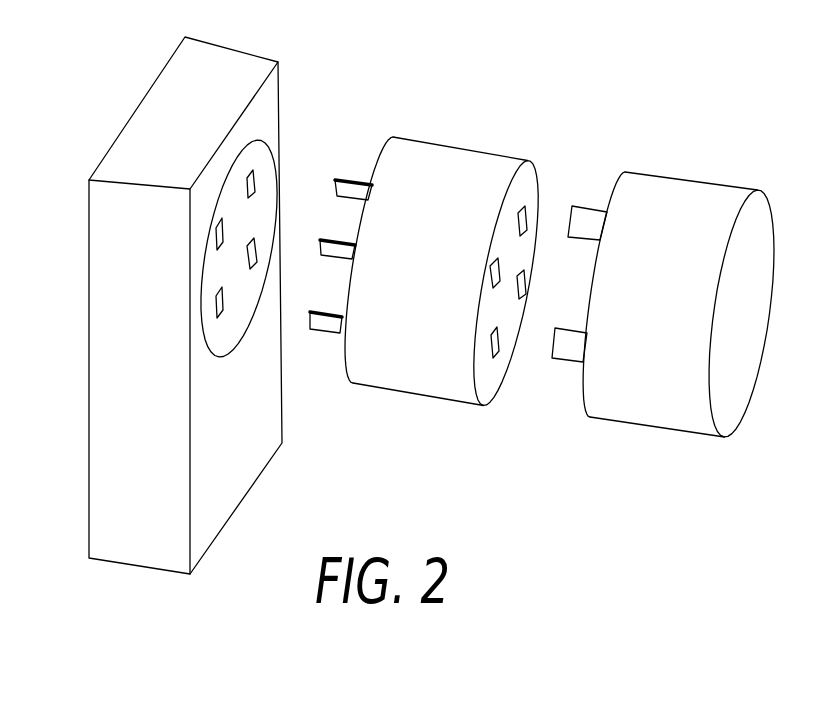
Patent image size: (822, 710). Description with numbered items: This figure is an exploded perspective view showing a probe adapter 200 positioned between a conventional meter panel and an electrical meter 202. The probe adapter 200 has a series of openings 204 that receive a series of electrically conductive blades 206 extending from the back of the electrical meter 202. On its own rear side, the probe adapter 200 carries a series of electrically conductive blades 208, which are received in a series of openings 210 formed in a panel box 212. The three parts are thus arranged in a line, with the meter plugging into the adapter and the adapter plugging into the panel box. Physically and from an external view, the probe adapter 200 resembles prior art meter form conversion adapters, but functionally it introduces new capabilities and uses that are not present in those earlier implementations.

The probe adapter 200 is at (467, 150).
The electrical meter 202 is at (733, 387).
The openings 204 is at (492, 268).
The electrically conductive blades 206 is at (590, 206).
The electrically conductive blades 208 is at (320, 240).
The openings 210 is at (255, 242).
The panel box 212 is at (137, 567).